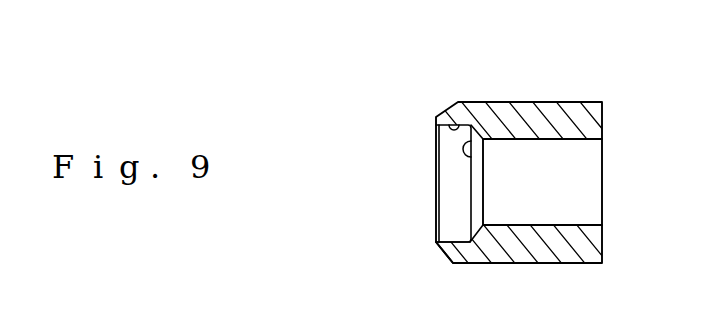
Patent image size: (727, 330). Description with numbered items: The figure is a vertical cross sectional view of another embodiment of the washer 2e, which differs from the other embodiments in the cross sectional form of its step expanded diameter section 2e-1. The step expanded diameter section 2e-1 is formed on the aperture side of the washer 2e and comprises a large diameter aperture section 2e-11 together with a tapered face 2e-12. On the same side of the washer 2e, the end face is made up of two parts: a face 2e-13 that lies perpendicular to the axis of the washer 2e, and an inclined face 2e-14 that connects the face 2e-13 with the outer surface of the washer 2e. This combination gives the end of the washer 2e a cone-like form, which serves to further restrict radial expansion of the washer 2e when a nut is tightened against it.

The washer 2e is at (589, 108).
The step expanded diameter section 2e-1 is at (438, 110).
The large diameter aperture section 2e-11 is at (452, 126).
The tapered face 2e-12 is at (472, 148).
The face perpendicular to the axis of the washer 2e-13 is at (434, 245).
The inclined face 2e-14 is at (441, 258).